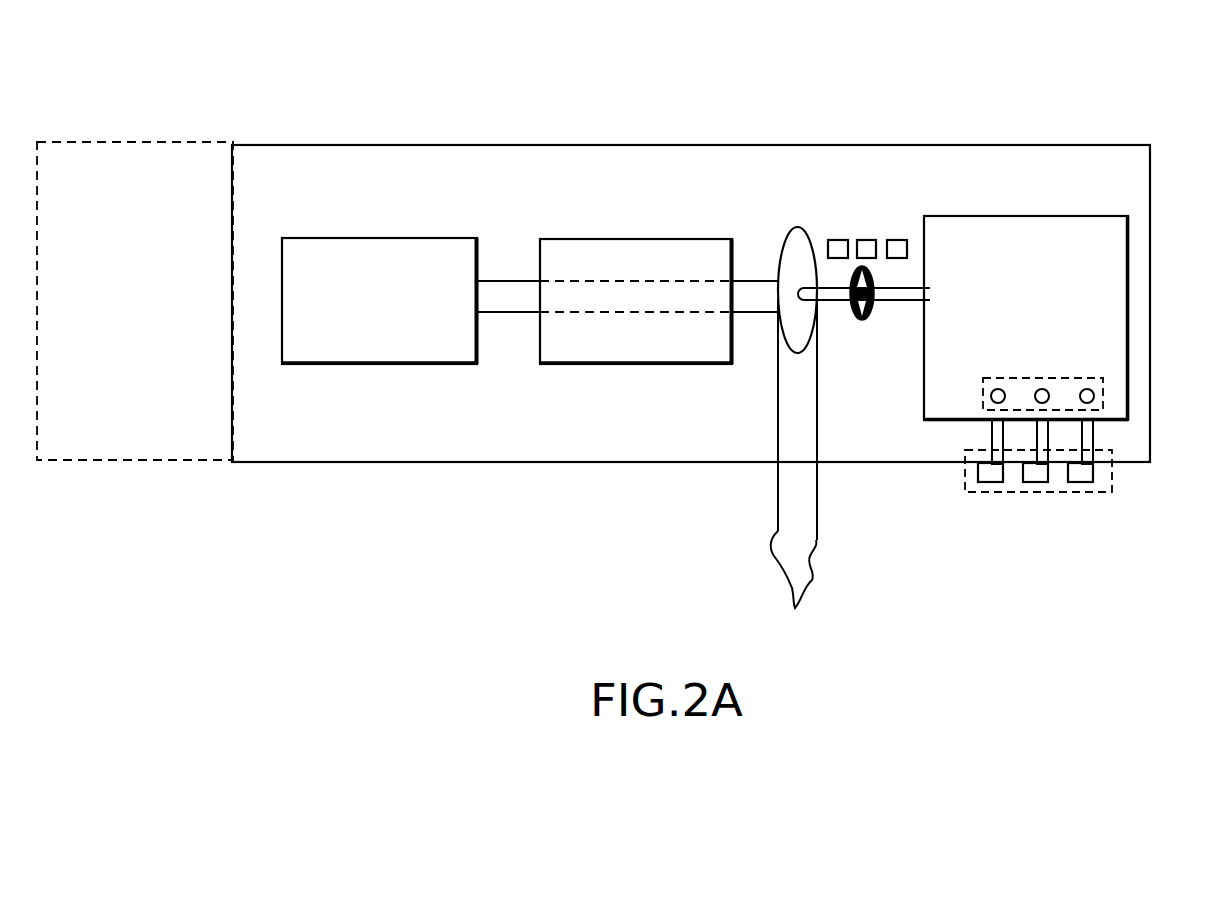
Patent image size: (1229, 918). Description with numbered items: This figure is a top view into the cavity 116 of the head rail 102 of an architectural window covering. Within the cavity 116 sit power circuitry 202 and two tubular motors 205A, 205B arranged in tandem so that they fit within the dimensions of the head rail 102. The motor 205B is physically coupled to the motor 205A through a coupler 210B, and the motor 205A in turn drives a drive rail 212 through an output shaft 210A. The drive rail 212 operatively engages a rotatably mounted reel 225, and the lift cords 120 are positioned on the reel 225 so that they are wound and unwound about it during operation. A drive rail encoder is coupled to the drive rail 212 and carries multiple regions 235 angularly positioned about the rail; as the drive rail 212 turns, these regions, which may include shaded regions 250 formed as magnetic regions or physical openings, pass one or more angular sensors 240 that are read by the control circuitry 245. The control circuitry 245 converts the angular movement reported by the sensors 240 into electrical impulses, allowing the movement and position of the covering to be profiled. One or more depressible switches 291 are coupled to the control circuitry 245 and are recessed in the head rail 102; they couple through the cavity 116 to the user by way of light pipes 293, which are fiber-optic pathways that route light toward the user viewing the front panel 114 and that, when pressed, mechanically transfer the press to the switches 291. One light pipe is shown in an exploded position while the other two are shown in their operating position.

The head rail 102 is at (927, 121).
The front panel 114 is at (491, 464).
The cavity 116 is at (295, 448).
The lift cords 120 is at (794, 470).
The power circuitry 202 is at (153, 312).
The motor 205A is at (657, 348).
The motor 205B is at (402, 314).
The output shaft 210A is at (757, 281).
The coupler 210B is at (515, 281).
The drive rail 212 is at (917, 288).
The reel 225 is at (798, 227).
The regions 235 is at (862, 320).
The angular sensors 240 is at (898, 240).
The control circuitry 245 is at (1045, 324).
The shaded regions 250 is at (871, 334).
The switches 291 is at (1103, 386).
The light pipes 293 is at (1112, 486).